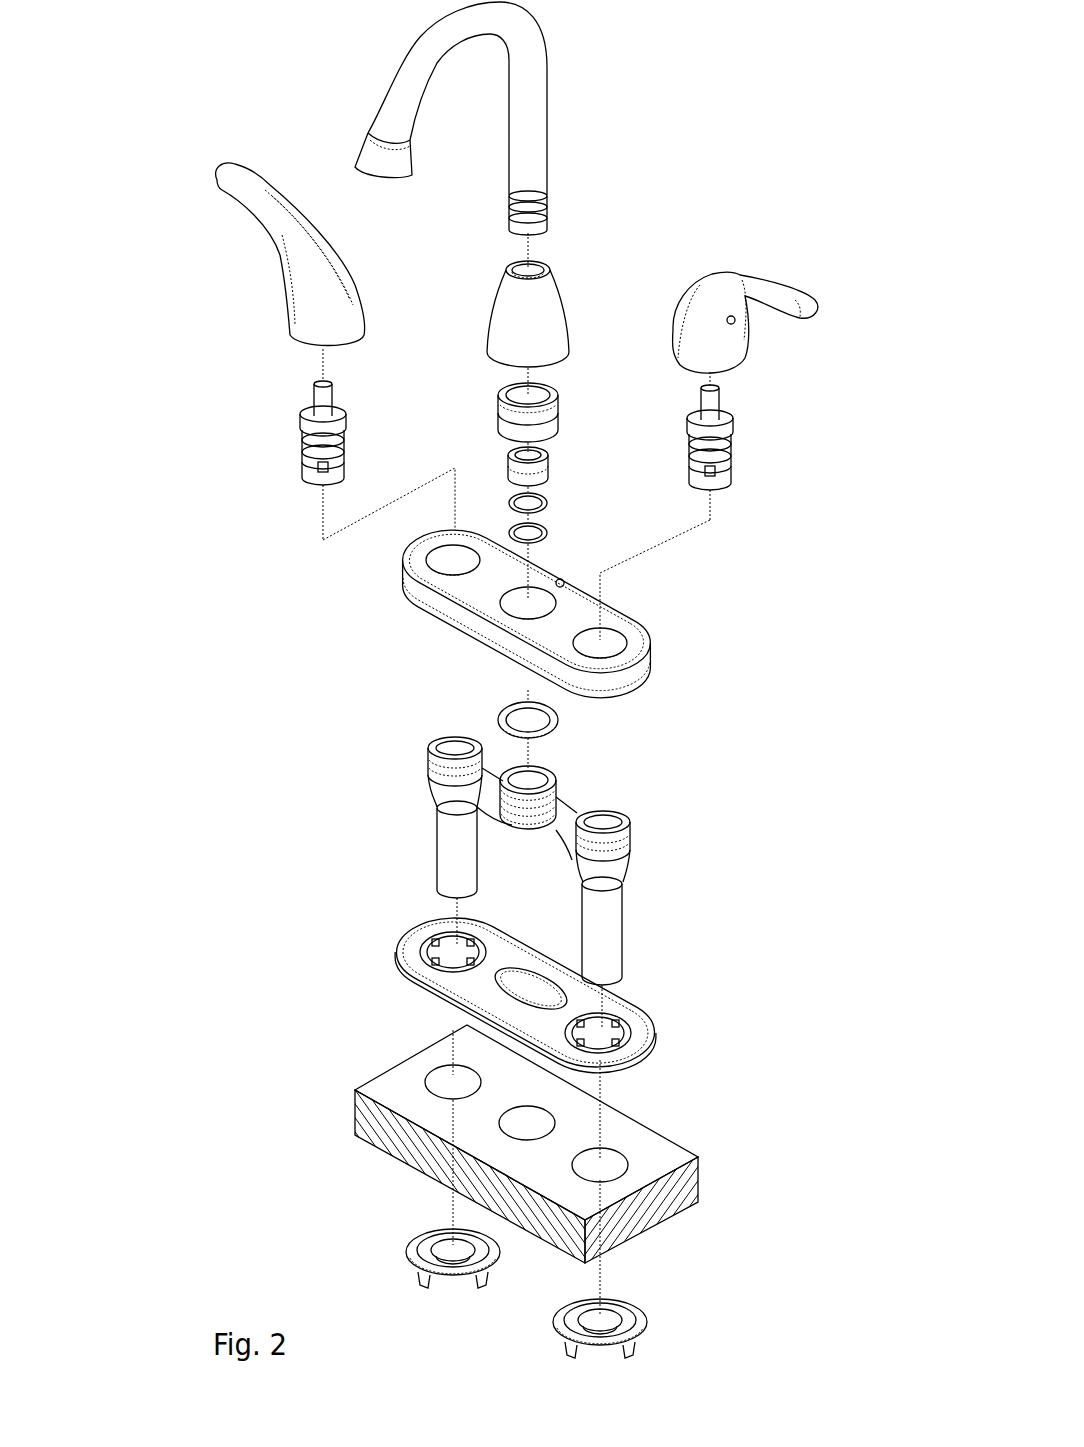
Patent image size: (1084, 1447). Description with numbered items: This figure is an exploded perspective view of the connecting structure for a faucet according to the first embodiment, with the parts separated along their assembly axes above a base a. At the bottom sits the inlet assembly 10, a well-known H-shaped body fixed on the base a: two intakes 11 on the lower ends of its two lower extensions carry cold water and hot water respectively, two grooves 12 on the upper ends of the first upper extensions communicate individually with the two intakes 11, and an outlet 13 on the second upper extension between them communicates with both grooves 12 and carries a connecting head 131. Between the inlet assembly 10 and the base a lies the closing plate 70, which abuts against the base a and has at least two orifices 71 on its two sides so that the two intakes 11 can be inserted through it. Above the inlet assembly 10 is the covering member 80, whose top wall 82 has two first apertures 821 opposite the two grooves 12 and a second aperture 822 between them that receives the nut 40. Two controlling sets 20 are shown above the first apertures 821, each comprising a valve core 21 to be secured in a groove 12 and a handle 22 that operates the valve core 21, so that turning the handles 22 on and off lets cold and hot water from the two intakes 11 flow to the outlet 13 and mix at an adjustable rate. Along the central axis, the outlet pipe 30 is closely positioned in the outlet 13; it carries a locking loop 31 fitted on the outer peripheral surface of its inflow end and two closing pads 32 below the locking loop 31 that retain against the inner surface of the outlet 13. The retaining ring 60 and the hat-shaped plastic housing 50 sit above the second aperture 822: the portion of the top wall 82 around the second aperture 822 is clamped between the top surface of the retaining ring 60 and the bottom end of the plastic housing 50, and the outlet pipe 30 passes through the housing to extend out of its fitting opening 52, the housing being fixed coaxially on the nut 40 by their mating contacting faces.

The inlet assembly 10 is at (521, 854).
The intakes 11 is at (437, 893).
The grooves 12 is at (455, 750).
The outlet 13 is at (620, 787).
The connecting head 131 is at (558, 792).
The controlling sets 20 is at (232, 263).
The valve core 21 is at (300, 428).
The handle 22 is at (300, 197).
The outlet pipe 30 is at (560, 103).
The locking loop 31 is at (549, 457).
The closing pads 32 is at (548, 502).
The nut 40 is at (575, 399).
The plastic housing 50 is at (589, 297).
The fitting opening 52 is at (528, 262).
The retaining ring 60 is at (578, 734).
The closing plate 70 is at (503, 998).
The orifices 71 is at (425, 940).
The covering member 80 is at (536, 571).
The top wall 82 is at (495, 566).
The first apertures 821 is at (445, 552).
The second aperture 822 is at (467, 598).
The base a is at (663, 1153).